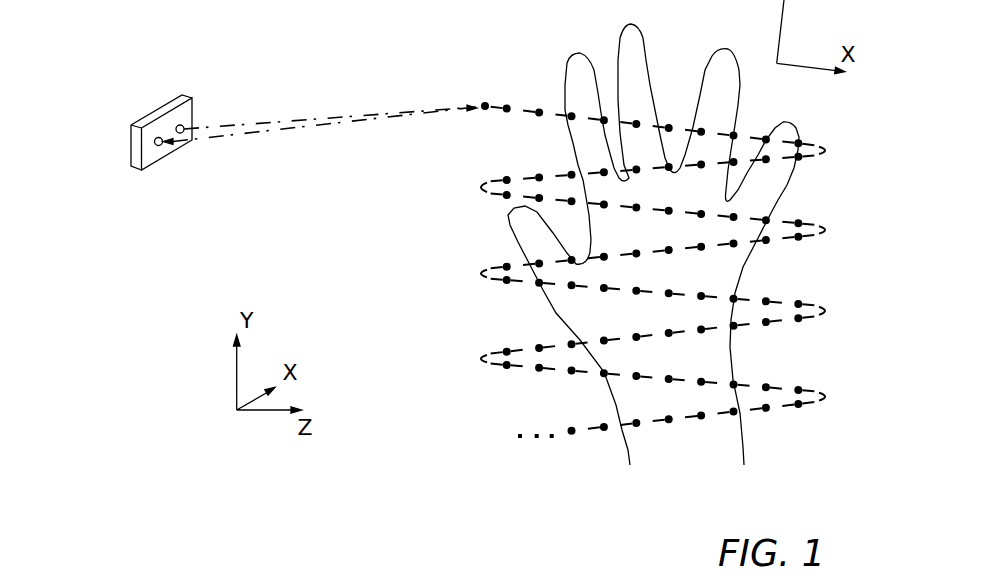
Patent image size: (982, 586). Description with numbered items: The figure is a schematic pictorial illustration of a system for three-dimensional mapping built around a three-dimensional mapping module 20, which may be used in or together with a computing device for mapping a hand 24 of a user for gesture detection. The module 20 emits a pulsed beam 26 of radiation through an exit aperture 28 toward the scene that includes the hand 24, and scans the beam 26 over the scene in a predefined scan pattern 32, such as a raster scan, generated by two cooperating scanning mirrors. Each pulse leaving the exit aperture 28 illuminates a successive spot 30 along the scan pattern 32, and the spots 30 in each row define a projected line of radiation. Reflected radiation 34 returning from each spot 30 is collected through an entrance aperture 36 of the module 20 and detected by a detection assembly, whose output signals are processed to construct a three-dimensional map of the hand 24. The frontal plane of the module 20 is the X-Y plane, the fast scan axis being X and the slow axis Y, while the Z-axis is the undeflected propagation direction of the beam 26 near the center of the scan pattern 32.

The 3D mapping module 20 is at (176, 158).
The hand 24 is at (744, 443).
The pulsed beam 26 is at (313, 118).
The exit aperture 28 is at (180, 125).
The spot 30 is at (636, 121).
The scan pattern 32 is at (786, 239).
The reflected radiation 34 is at (355, 128).
The entrance aperture 36 is at (156, 138).